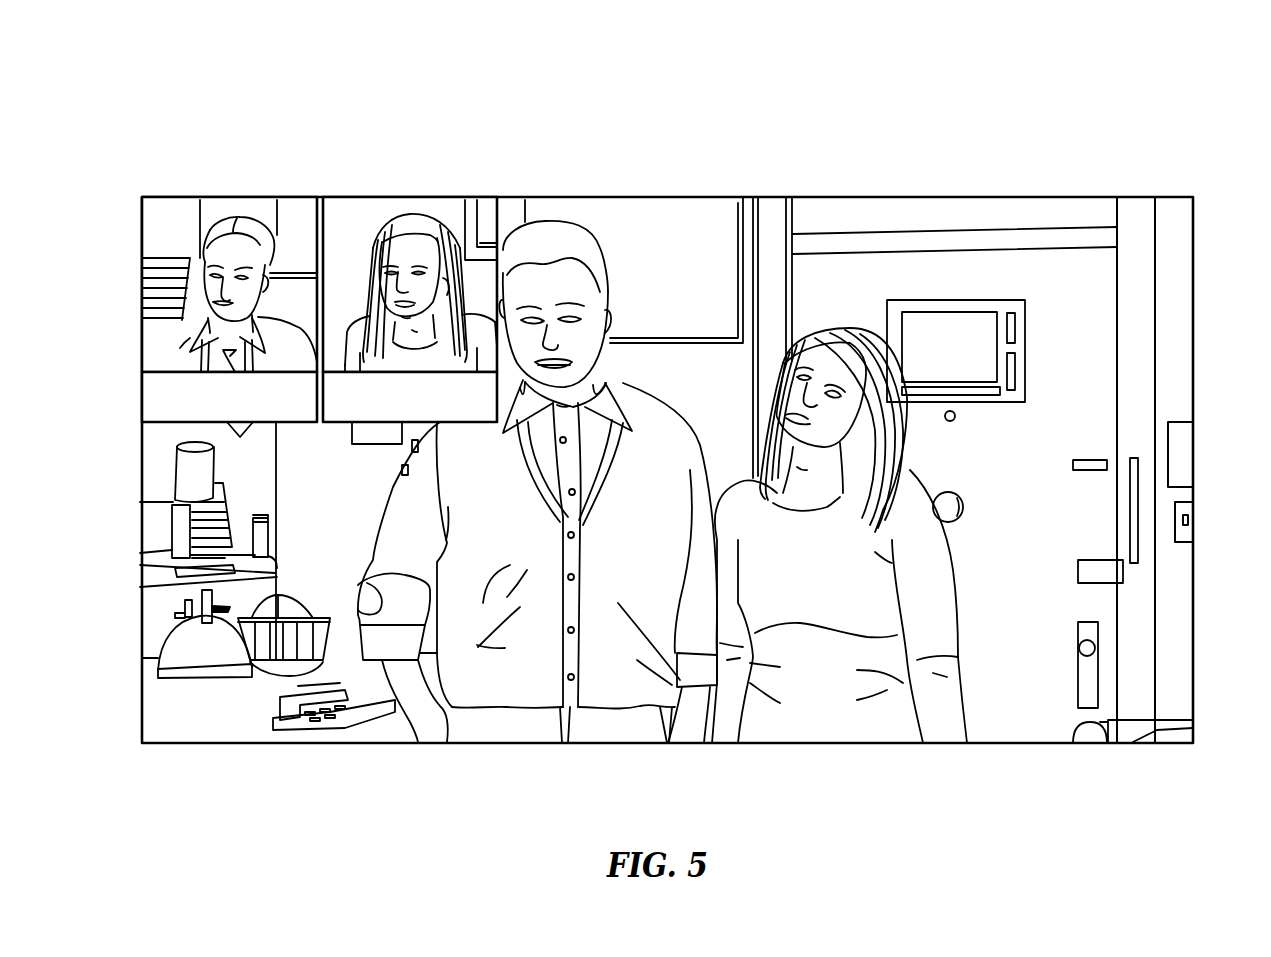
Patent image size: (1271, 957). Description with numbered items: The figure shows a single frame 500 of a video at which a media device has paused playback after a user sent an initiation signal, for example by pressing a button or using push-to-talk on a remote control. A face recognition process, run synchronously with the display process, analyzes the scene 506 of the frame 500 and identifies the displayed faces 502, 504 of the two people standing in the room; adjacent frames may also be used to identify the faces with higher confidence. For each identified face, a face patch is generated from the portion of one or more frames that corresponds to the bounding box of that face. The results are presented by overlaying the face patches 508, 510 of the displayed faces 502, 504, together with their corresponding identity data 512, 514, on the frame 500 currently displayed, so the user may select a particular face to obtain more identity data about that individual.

The frame 500 is at (136, 112).
The displayed face 502 is at (556, 248).
The displayed face 504 is at (840, 325).
The scene 506 is at (1160, 362).
The face patch 508 is at (245, 197).
The face patch 510 is at (417, 197).
The identity data 512 is at (152, 398).
The identity data 514 is at (322, 402).